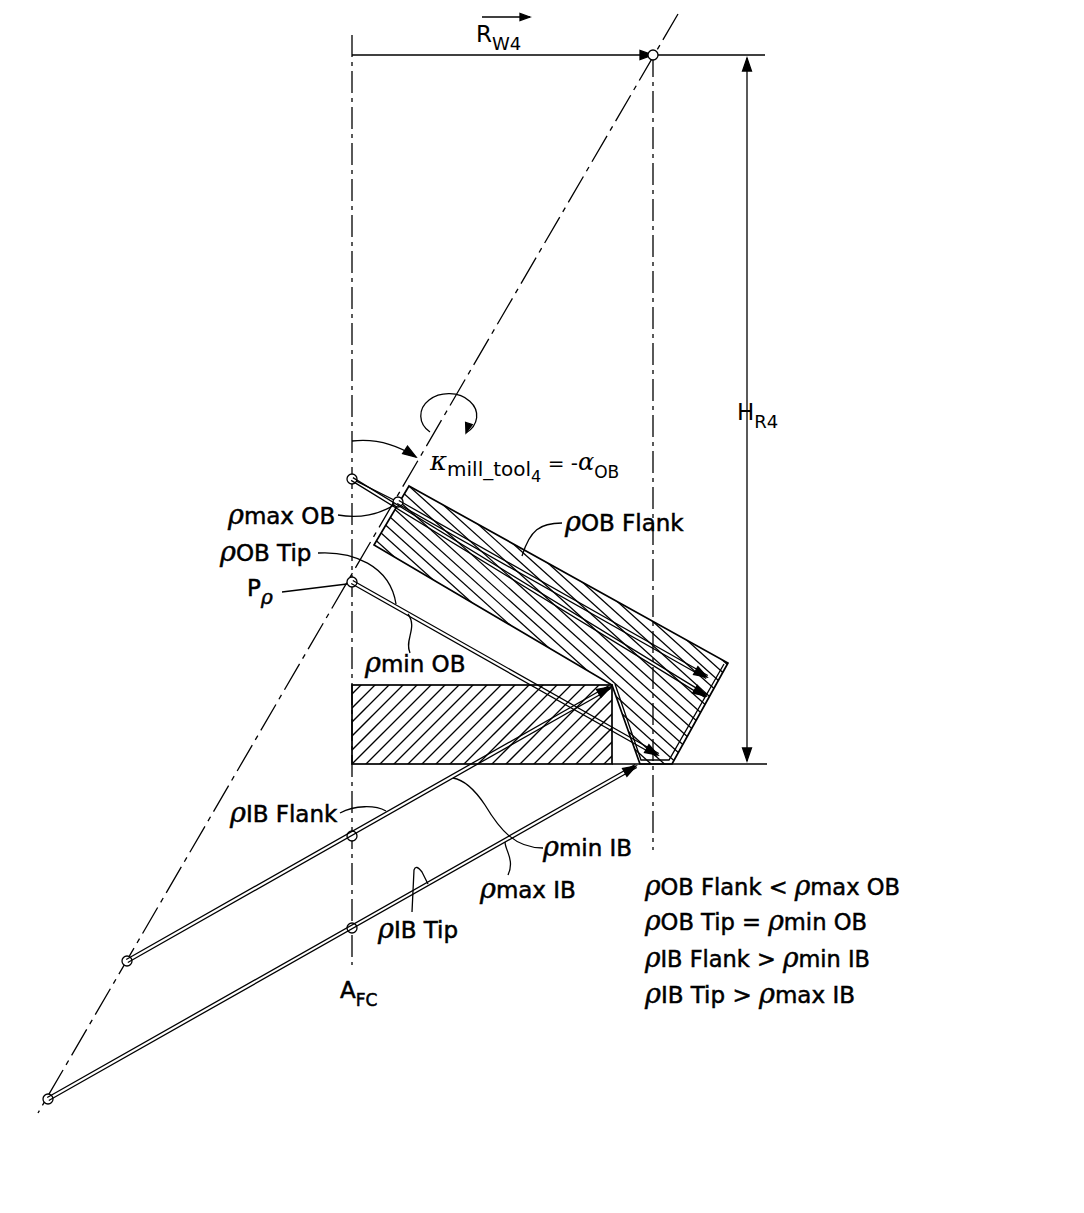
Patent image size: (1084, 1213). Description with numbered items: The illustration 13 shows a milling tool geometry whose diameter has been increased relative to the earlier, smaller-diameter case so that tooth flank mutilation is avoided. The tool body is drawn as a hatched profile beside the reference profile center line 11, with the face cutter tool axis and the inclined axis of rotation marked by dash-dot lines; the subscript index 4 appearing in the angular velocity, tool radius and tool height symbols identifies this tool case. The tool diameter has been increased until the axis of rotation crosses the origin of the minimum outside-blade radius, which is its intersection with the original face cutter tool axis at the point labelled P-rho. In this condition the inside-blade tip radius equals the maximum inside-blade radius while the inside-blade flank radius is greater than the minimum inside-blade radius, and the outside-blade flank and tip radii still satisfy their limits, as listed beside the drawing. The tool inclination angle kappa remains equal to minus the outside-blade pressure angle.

The reference profile center line 11 is at (668, 800).
The tool rotation axis 4 is at (358, 563).
The figure caption 13 is at (443, 1159).